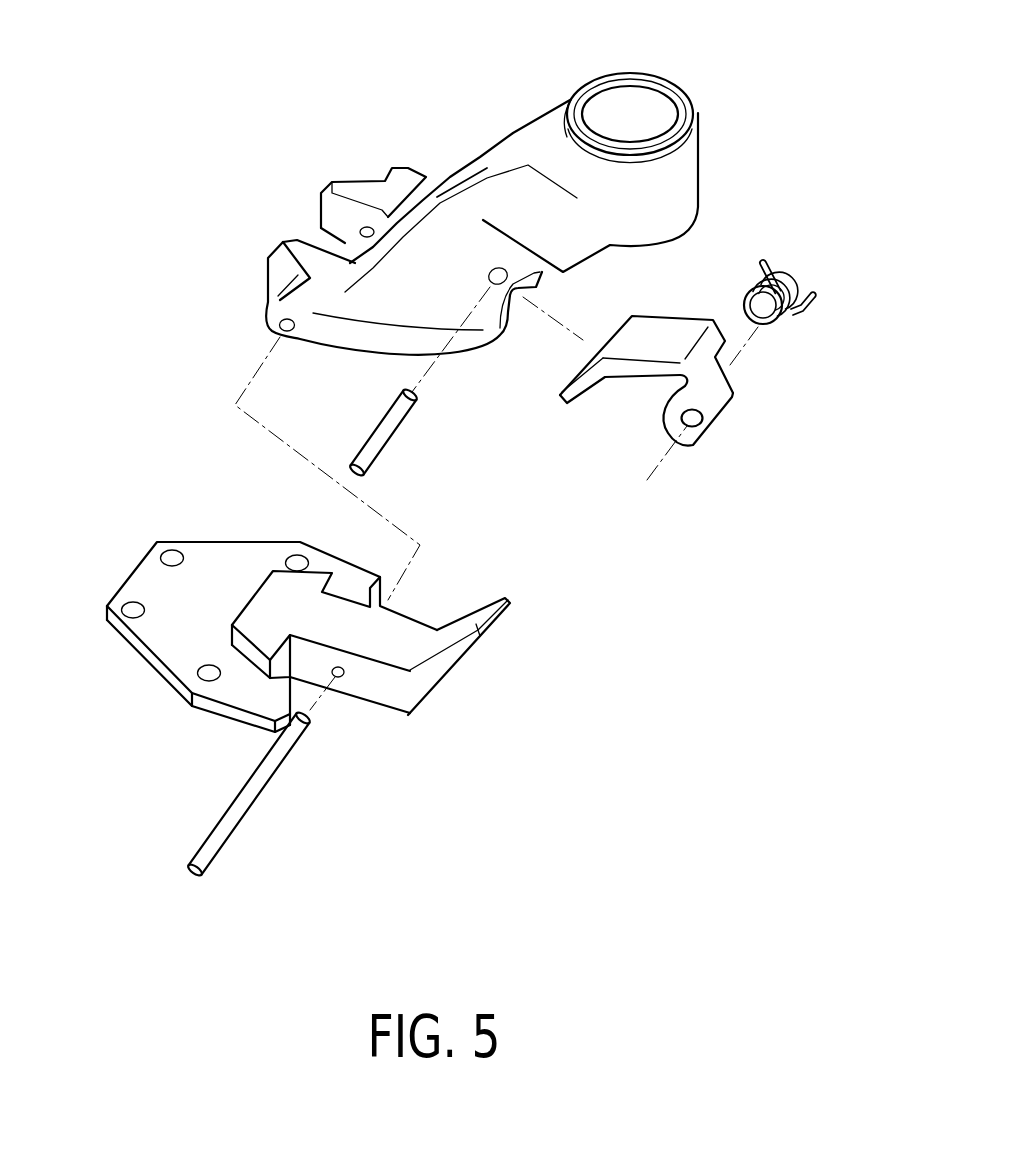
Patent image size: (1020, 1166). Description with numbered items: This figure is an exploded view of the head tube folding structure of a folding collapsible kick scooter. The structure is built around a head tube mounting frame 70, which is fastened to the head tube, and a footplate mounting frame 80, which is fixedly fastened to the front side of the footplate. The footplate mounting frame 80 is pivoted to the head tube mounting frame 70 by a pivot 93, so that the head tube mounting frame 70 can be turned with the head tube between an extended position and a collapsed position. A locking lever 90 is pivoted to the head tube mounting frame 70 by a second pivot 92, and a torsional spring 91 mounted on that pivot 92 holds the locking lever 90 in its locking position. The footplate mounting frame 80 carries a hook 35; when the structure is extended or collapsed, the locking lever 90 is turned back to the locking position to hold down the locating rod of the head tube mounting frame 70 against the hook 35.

The head tube mounting frame 70 is at (537, 134).
The torsional spring 91 is at (793, 275).
The pivot 92 is at (387, 433).
The locking lever 90 is at (687, 393).
The hook 35 is at (498, 618).
The footplate mounting frame 80 is at (377, 688).
The pivot 93 is at (240, 813).